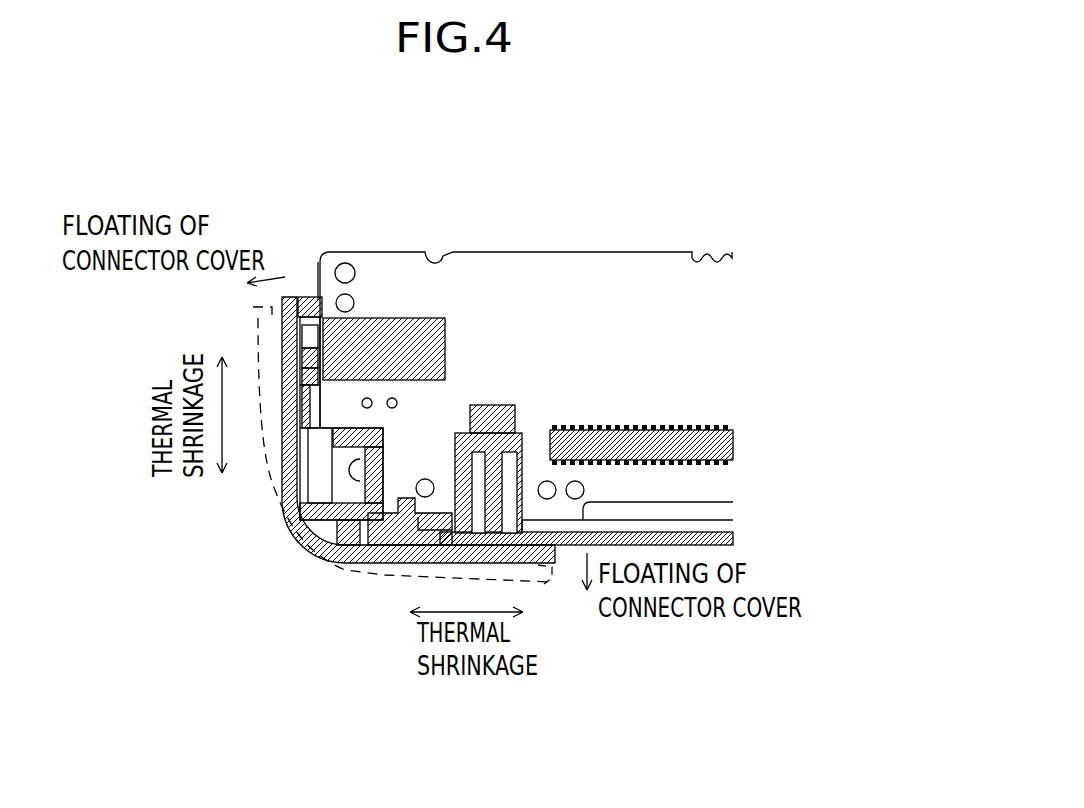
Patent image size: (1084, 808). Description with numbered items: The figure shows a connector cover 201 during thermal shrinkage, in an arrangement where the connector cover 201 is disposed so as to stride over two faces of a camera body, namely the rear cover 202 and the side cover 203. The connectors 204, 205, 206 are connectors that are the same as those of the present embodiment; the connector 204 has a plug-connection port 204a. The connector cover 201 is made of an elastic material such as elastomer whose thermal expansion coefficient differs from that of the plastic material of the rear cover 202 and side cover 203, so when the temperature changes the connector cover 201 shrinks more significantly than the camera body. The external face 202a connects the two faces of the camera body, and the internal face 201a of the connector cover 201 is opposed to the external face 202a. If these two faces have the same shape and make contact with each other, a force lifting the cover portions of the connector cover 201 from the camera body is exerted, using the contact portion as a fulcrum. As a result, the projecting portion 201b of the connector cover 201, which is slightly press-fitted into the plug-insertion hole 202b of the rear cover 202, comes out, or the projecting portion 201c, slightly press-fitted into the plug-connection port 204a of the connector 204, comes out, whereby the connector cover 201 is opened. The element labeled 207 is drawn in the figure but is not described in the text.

The connector cover 201 is at (362, 548).
The internal face 201a is at (348, 530).
The projecting portion 201b is at (500, 500).
The projecting portion 201c is at (305, 334).
The rear cover 202 is at (735, 535).
The external face 202a is at (292, 548).
The plug-insertion hole 202b is at (522, 523).
The side cover 203 is at (312, 295).
The connector 204 is at (410, 327).
The plug-connection port 204a is at (318, 318).
The connector 205 is at (383, 545).
The connector 206 is at (513, 545).
The circuit board 207 is at (650, 300).